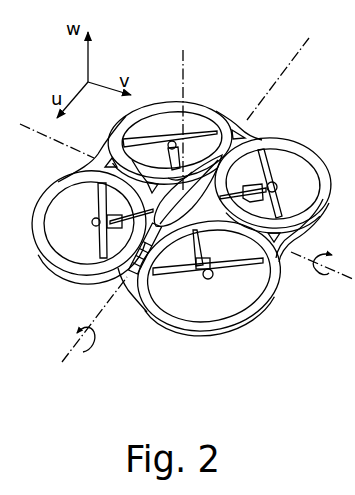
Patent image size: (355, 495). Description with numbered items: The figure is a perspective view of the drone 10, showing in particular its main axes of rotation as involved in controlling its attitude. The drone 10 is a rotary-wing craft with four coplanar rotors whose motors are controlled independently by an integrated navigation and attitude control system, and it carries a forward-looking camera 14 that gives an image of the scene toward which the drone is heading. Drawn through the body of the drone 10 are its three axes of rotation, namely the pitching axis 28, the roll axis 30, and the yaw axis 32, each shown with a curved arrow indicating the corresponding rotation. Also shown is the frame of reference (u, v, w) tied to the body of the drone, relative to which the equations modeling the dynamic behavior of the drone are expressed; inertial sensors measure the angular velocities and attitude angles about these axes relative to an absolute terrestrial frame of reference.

The drone 10 is at (179, 263).
The forward-looking camera 14 is at (128, 280).
The pitching axis 28 is at (333, 272).
The roll axis 30 is at (72, 354).
The yaw axis 32 is at (183, 50).